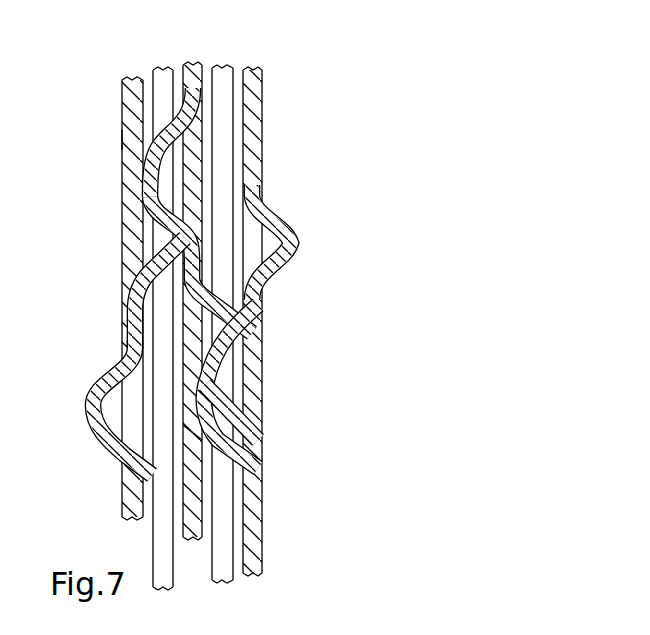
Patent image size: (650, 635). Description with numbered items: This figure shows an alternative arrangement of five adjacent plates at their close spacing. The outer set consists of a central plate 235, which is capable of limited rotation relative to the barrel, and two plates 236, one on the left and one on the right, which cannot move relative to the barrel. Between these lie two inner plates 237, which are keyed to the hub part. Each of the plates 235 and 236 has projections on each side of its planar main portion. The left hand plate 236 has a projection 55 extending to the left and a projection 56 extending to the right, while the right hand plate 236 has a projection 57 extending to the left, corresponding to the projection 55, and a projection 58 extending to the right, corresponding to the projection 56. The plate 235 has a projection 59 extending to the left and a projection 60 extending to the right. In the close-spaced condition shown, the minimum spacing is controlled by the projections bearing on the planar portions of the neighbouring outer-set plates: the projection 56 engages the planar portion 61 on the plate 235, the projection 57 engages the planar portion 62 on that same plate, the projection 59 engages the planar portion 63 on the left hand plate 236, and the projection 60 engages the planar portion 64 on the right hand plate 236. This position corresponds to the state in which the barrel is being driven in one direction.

The projection 55 is at (90, 418).
The projection 56 is at (175, 245).
The projection 57 is at (213, 408).
The projection 58 is at (298, 243).
The projection 59 is at (145, 170).
The projection 60 is at (233, 322).
The planar portion 61 is at (197, 243).
The planar portion 62 is at (190, 432).
The planar portion 63 is at (122, 140).
The planar portion 64 is at (257, 330).
The plate 235 is at (203, 53).
The plate 236 is at (128, 87).
The inner plate 237 is at (163, 73).